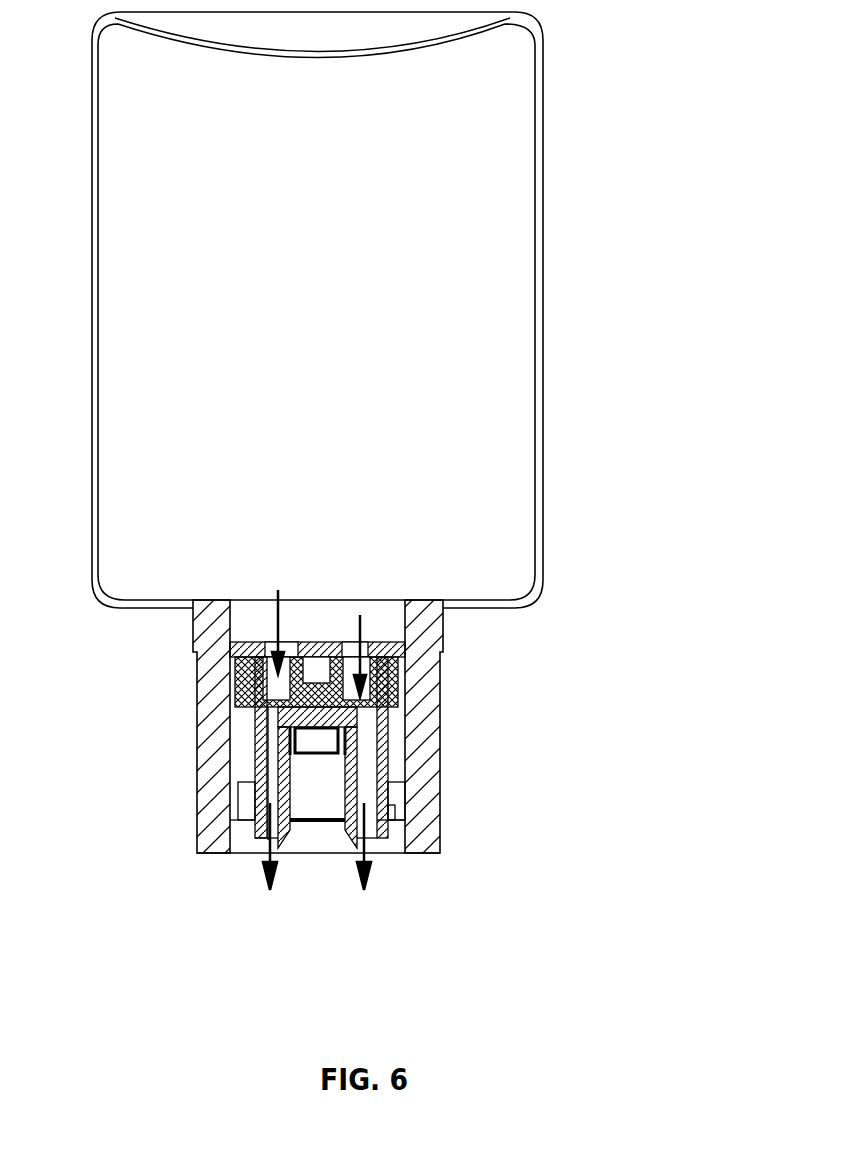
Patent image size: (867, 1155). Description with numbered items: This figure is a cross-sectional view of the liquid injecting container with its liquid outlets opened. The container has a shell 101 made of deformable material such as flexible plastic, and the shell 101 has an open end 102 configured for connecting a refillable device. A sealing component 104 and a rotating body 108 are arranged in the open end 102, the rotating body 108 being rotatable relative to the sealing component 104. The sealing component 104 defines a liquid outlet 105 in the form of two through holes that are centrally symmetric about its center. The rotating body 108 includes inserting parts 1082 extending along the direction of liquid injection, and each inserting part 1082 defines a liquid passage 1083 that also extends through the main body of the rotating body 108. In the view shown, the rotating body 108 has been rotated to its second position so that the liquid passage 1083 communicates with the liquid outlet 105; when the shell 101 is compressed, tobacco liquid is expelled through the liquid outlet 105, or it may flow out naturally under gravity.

The shell 101 is at (543, 220).
The open end 102 is at (393, 842).
The sealing component 104 is at (400, 657).
The liquid outlet 105 is at (225, 663).
The rotating body 108 is at (385, 713).
The inserting part 1082 is at (227, 762).
The liquid passage 1083 is at (227, 792).